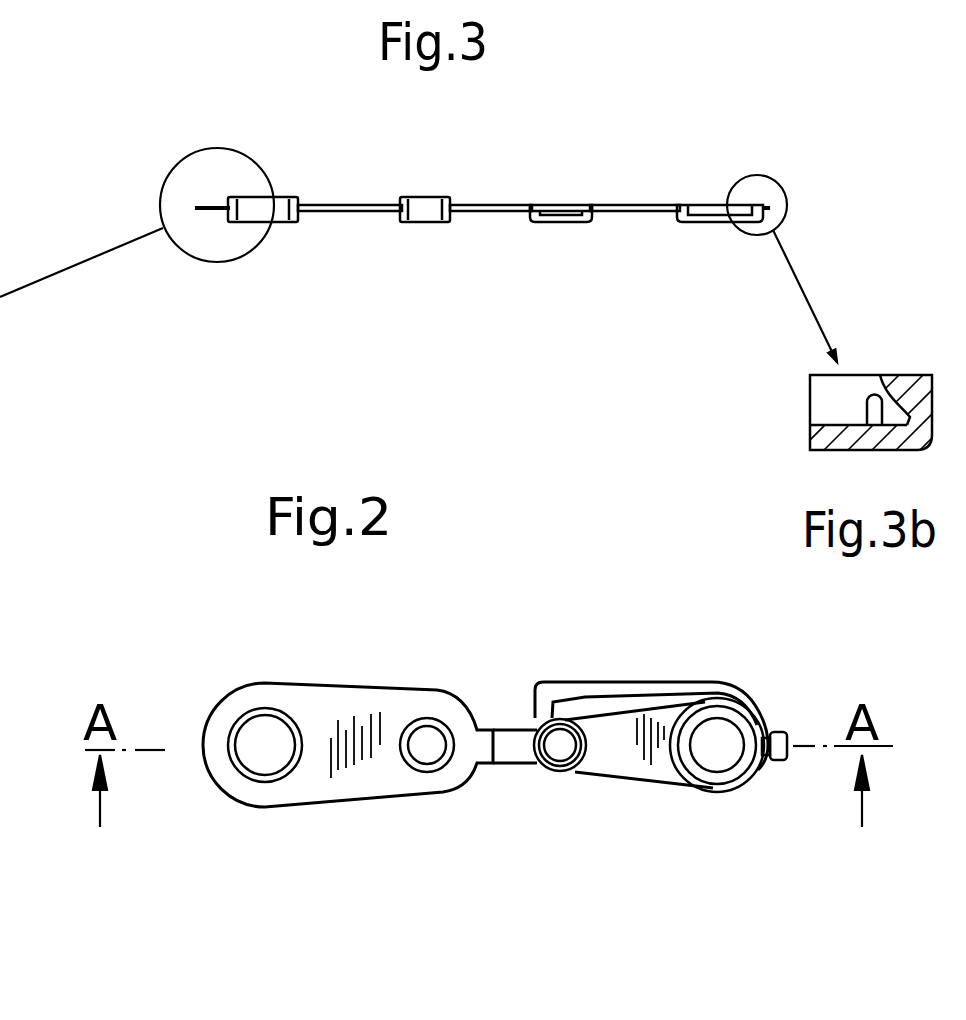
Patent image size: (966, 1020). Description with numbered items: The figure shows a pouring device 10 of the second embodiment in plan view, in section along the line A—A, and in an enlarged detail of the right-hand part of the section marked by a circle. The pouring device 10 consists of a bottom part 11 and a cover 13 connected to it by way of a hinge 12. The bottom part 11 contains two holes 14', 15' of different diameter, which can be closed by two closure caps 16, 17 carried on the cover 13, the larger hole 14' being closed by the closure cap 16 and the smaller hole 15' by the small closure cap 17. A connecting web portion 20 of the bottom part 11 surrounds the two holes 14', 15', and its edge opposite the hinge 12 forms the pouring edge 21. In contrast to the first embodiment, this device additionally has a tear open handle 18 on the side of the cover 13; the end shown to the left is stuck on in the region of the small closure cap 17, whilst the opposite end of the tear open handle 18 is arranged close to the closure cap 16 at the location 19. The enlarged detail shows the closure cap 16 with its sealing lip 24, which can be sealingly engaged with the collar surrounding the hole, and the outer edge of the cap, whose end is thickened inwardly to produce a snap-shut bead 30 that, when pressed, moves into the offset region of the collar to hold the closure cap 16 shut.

In FIG. 2, the pouring device 10 is at (410, 665).
In FIG. 3, the bottom part 11 is at (362, 200).
In FIG. 2, the bottom part 11 is at (312, 805).
In FIG. 3, the hinge 12 is at (485, 213).
In FIG. 2, the hinge 12 is at (492, 767).
In FIG. 3, the cover 13 is at (650, 205).
In FIG. 2, the cover 13 is at (637, 763).
In FIG. 2, the hole 14' is at (226, 798).
In FIG. 2, the hole 15' is at (453, 688).
In FIG. 3, the closure cap 16 is at (692, 223).
In FIG. 3B, the closure cap 16 is at (845, 435).
In FIG. 2, the closure cap 16 is at (725, 753).
In FIG. 3, the closure cap 17 is at (567, 223).
In FIG. 2, the tear open handle 18 is at (612, 688).
In FIG. 2, the location 19 is at (753, 745).
In FIG. 3, the connecting web portion 20 is at (320, 213).
In FIG. 2, the connecting web portion 20 is at (328, 717).
In FIG. 2, the pouring edge 21 is at (202, 745).
In FIG. 3B, the sealing lip 24 is at (872, 397).
In FIG. 3B, the snap-shut bead 30 is at (888, 375).